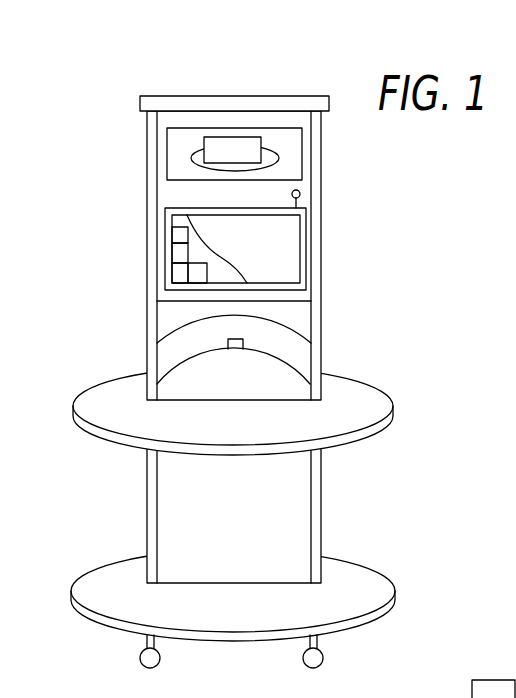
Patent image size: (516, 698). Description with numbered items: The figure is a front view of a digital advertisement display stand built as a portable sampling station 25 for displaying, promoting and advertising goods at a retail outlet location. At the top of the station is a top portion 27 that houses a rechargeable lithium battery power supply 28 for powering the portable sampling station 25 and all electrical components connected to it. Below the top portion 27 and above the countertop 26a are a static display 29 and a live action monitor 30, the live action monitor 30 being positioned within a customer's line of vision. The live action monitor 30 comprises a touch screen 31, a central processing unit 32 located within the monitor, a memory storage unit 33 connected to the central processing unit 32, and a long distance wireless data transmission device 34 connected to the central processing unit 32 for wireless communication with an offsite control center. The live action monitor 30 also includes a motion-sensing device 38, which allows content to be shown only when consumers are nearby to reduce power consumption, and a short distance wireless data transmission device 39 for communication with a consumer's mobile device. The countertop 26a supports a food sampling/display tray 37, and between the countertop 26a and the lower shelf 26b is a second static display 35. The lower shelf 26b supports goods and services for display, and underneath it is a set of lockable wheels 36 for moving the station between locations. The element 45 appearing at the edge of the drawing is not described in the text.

The portable sampling station 25 is at (250, 76).
The countertop 26a is at (360, 395).
The lower shelf 26b is at (358, 573).
The top portion 27 is at (121, 103).
The rechargeable lithium battery power supply 28 is at (268, 100).
The static display 29 is at (302, 152).
The live action monitor 30 is at (306, 257).
The touch screen 31 is at (278, 271).
The central processing unit 32 is at (175, 255).
The memory storage unit 33 is at (175, 237).
The long distance wireless data transmission device 34 is at (175, 273).
The second static display 35 is at (250, 537).
The set of lockable wheels 36 is at (161, 656).
The food sampling/display tray 37 is at (252, 378).
The motion-sensing device 38 is at (300, 195).
The short distance wireless data transmission device 39 is at (198, 280).
The adjacent unit 45 is at (509, 672).